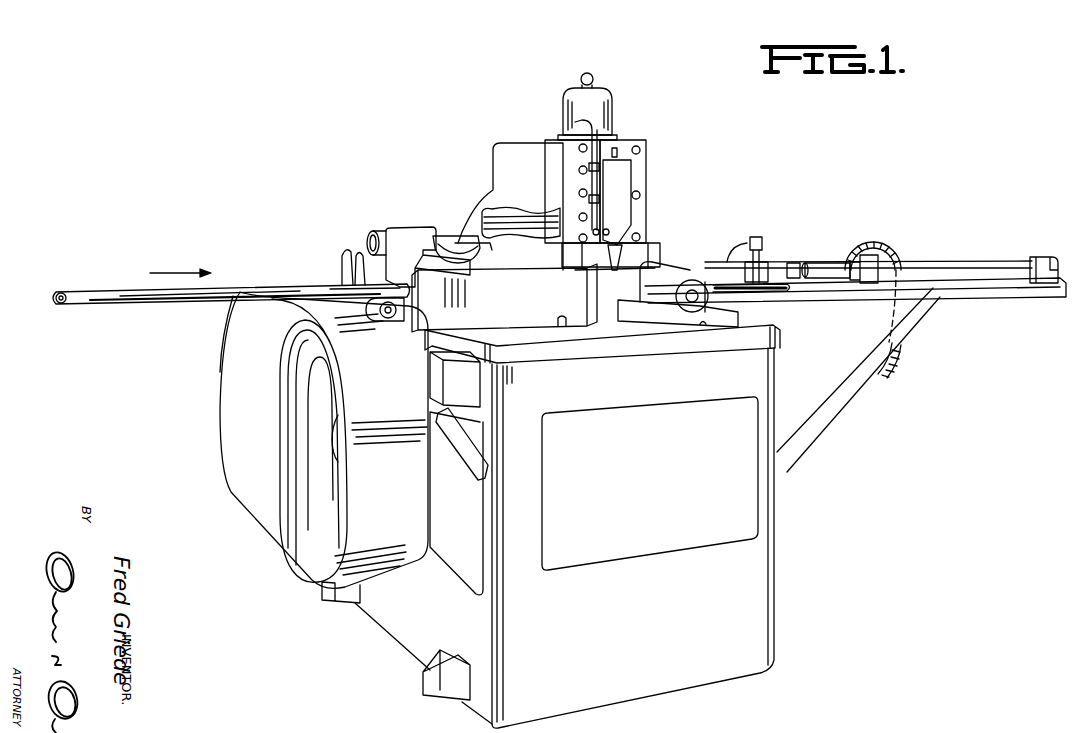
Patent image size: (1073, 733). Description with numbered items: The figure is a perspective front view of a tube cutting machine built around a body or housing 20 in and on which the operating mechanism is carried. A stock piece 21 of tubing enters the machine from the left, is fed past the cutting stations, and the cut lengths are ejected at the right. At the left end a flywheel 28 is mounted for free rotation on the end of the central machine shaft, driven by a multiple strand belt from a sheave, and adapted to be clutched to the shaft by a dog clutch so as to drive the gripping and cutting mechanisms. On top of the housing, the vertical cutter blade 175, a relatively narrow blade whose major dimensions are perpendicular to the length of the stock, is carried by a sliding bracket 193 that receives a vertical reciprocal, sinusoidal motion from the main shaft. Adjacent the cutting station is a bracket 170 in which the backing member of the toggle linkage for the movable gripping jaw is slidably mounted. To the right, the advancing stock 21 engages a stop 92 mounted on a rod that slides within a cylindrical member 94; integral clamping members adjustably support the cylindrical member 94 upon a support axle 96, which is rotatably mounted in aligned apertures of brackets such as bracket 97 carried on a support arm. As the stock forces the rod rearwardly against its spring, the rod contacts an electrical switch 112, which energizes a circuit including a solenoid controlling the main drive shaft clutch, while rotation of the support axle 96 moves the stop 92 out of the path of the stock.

The body or housing 20 is at (757, 589).
The stock piece 21 is at (297, 287).
The flywheel 28 is at (310, 500).
The stop 92 is at (794, 262).
The cylindrical member 94 is at (832, 262).
The support axle 96 is at (1003, 262).
The bracket 97 is at (1043, 258).
The electrical switch 112 is at (855, 256).
The bracket 170 is at (665, 282).
The vertical cutter blade 175 is at (625, 262).
The sliding bracket 193 is at (601, 193).